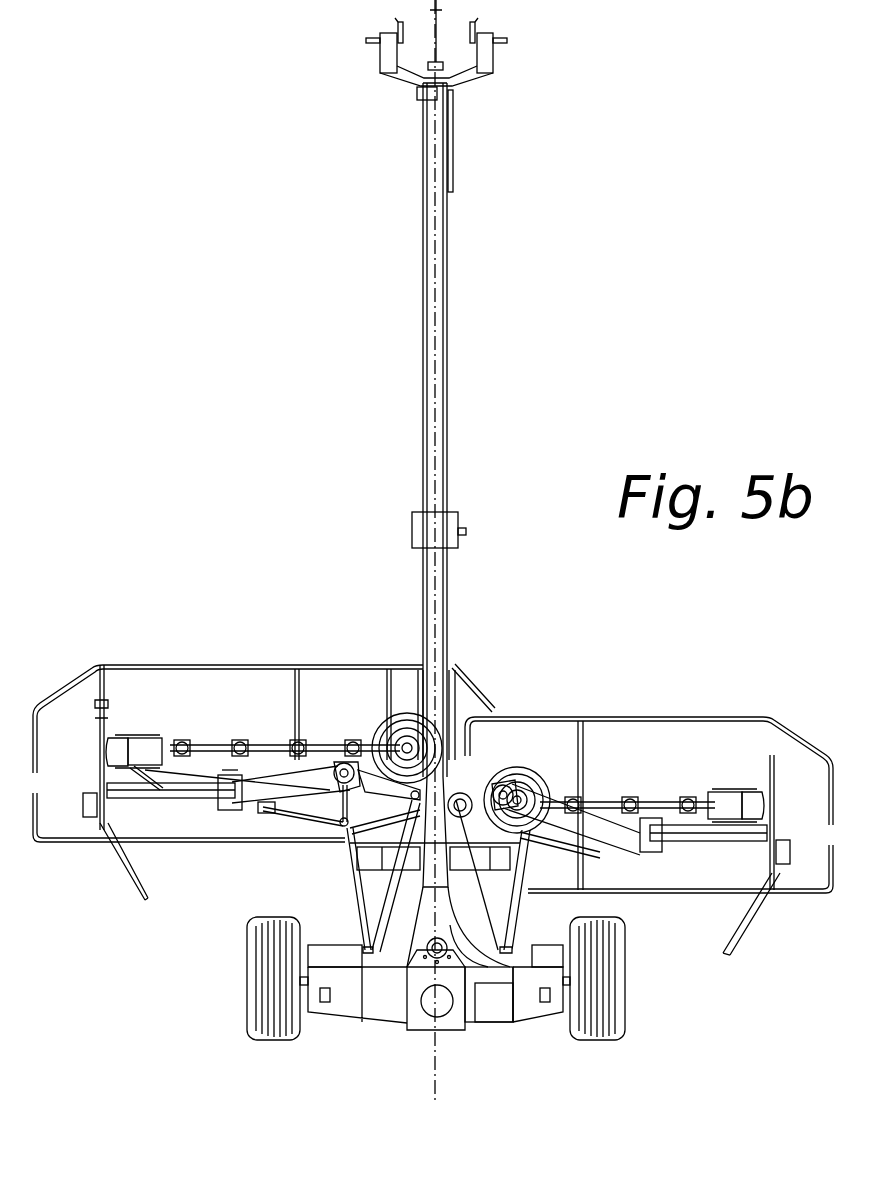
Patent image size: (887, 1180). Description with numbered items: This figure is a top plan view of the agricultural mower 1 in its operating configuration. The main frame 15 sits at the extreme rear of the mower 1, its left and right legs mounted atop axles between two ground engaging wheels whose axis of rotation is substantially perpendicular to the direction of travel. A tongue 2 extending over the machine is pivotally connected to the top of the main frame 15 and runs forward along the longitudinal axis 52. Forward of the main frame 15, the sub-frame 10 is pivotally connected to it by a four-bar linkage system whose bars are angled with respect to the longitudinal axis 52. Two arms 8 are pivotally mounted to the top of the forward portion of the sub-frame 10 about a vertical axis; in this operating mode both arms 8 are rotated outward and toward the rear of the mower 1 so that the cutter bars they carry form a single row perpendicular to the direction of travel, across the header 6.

The agricultural mower 1 is at (173, 235).
The tongue 2 is at (435, 223).
The header 6 is at (133, 790).
The arms 8 is at (262, 792).
The sub-frame 10 is at (376, 802).
The main frame 15 is at (495, 1005).
The longitudinal axis 52 is at (432, 1040).